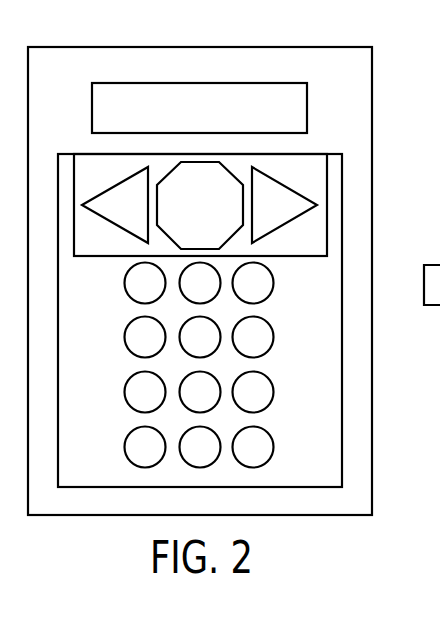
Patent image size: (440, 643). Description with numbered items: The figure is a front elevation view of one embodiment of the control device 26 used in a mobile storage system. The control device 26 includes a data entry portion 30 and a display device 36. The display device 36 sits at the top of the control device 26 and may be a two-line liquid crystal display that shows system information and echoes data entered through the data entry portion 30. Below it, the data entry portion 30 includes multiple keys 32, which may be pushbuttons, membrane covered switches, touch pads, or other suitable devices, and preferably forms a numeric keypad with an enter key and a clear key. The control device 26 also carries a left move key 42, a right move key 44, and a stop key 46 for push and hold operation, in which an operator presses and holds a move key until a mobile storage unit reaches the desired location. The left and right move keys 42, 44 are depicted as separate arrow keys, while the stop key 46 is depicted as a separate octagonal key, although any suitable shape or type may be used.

The control device 26 is at (202, 46).
The data entry portion 30 is at (298, 346).
The keys 32 is at (140, 283).
The display device 36 is at (188, 122).
The left move key 42 is at (112, 218).
The right move key 44 is at (261, 218).
The stop key 46 is at (189, 218).